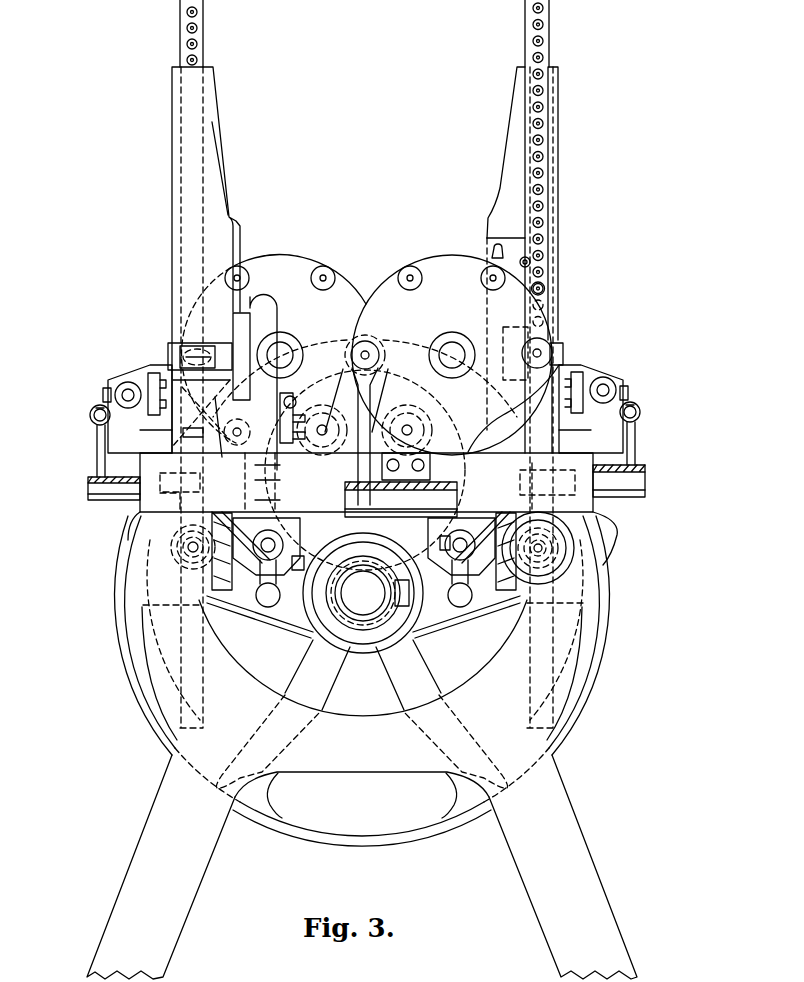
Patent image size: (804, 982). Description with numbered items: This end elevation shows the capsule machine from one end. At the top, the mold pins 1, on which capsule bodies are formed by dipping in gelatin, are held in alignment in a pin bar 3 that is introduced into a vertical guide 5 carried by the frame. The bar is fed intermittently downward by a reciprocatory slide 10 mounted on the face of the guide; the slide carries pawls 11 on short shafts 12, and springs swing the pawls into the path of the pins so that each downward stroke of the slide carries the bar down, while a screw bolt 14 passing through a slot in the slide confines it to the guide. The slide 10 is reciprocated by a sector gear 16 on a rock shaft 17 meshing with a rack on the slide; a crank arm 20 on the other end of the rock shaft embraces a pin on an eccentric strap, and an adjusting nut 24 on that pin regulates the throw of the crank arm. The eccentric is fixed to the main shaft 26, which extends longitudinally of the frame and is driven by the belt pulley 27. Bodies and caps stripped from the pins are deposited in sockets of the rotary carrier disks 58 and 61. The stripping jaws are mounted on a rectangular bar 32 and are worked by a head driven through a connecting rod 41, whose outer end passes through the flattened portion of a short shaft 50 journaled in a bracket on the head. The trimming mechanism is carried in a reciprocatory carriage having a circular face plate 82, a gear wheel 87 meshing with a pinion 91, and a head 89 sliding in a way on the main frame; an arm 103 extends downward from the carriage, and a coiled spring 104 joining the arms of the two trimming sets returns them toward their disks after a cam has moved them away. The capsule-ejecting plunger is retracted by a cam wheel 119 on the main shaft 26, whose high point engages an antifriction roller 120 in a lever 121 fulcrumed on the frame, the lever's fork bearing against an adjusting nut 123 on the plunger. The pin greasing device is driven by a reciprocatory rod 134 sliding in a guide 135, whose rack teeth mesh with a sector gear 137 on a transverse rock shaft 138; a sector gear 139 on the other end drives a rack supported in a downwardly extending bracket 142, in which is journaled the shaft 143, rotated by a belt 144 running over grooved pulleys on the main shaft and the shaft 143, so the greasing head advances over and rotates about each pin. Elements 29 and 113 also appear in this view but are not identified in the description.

The mold pins 1 is at (178, 26).
The bar 3 is at (548, 41).
The vertical guide 5 is at (500, 188).
The reciprocatory slide 10 is at (510, 238).
The pawls 11 is at (541, 297).
The short shafts 12 is at (524, 262).
The screw bolt 14 is at (492, 253).
The sector gear 16 is at (364, 551).
The rock shaft 17 is at (440, 543).
The crank arm 20 is at (364, 568).
The adjusting nut 24 is at (232, 610).
The main shaft 26 is at (363, 593).
The belt pulley 27 is at (613, 623).
The guide roller 29 is at (170, 356).
The rectangular bar 32 is at (161, 400).
The connecting rod 41 is at (127, 391).
The short shaft 50 is at (105, 389).
The rotary carrier disk 58 is at (437, 256).
The rotary carrier disk 61 is at (296, 249).
The circular face plate 82 is at (324, 390).
The gear wheel 87 is at (317, 478).
The head 89 is at (262, 428).
The pinion 91 is at (313, 450).
The arm 103 is at (336, 560).
The coiled spring 104 is at (340, 500).
The lever plate 113 is at (289, 397).
The cam wheel 119 is at (367, 652).
The antifriction roller 120 is at (436, 617).
The lever 121 is at (389, 386).
The adjusting nut 123 is at (373, 344).
The reciprocatory rod 134 is at (89, 417).
The guide 135 is at (96, 408).
The sector gear 137 is at (96, 447).
The transverse rock shaft 138 is at (88, 487).
The sector gear 139 is at (608, 540).
The downwardly extending bracket 142 is at (128, 537).
The shaft 143 is at (372, 549).
The belt 144 is at (363, 620).